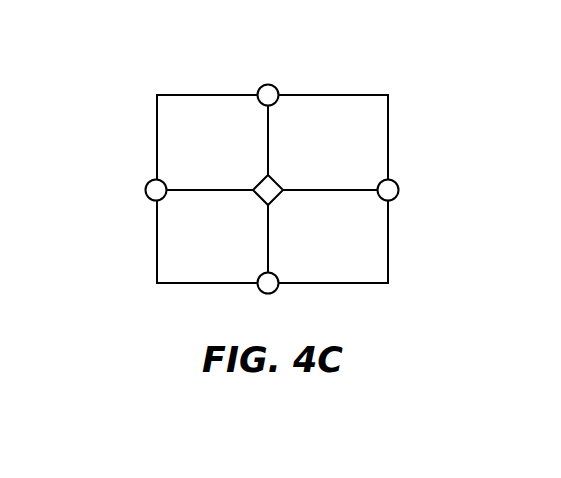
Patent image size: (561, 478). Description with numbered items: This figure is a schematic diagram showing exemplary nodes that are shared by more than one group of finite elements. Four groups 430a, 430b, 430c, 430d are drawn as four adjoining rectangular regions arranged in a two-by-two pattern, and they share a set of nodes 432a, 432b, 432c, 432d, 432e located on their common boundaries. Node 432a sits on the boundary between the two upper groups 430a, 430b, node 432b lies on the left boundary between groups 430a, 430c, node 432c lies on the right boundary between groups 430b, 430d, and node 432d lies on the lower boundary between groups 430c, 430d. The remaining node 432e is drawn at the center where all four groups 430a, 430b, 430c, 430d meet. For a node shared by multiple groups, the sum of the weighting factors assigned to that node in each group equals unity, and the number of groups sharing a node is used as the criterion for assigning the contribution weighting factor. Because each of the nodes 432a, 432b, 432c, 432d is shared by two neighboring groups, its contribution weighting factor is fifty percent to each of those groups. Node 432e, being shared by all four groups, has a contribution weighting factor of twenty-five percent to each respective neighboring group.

The group of finite elements 430a is at (240, 139).
The group of finite elements 430b is at (357, 139).
The group of finite elements 430c is at (240, 272).
The group of finite elements 430d is at (356, 272).
The shared node 432a is at (259, 90).
The shared node 432b is at (147, 185).
The shared node 432c is at (397, 184).
The shared node 432d is at (277, 289).
The shared node 432e is at (280, 200).